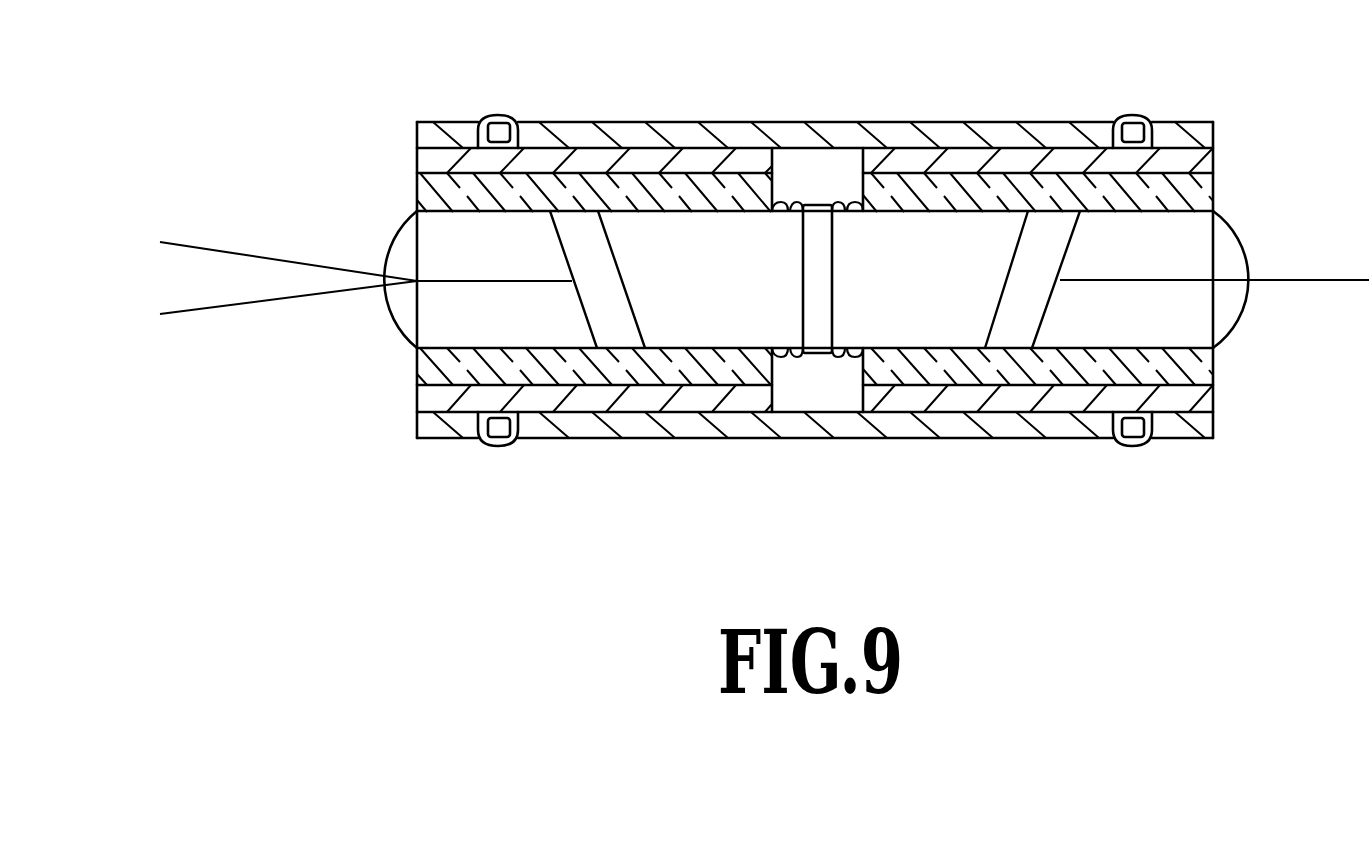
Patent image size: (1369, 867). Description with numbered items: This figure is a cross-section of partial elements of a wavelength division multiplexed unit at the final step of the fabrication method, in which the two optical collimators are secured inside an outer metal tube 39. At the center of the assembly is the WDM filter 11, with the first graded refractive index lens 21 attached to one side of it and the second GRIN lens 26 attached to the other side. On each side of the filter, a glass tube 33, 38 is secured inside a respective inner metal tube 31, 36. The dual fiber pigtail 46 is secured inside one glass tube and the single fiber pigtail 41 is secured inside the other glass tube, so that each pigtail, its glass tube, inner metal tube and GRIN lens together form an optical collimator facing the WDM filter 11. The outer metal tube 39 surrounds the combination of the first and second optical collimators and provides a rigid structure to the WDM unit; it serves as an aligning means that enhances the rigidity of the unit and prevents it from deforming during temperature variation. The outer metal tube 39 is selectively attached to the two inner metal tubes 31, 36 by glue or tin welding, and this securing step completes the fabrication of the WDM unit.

The WDM filter 11 is at (816, 357).
The first graded refractive index (GRIN) lens 21 is at (850, 352).
The second GRIN lens 26 is at (791, 352).
The inner metal tube 31 is at (940, 162).
The glass tube 33 is at (887, 192).
The inner metal tube 36 is at (738, 162).
The glass tube 38 is at (697, 188).
The outer metal tube 39 is at (985, 128).
The single fiber pigtail 41 is at (1060, 230).
The dual fiber pigtail 46 is at (565, 217).